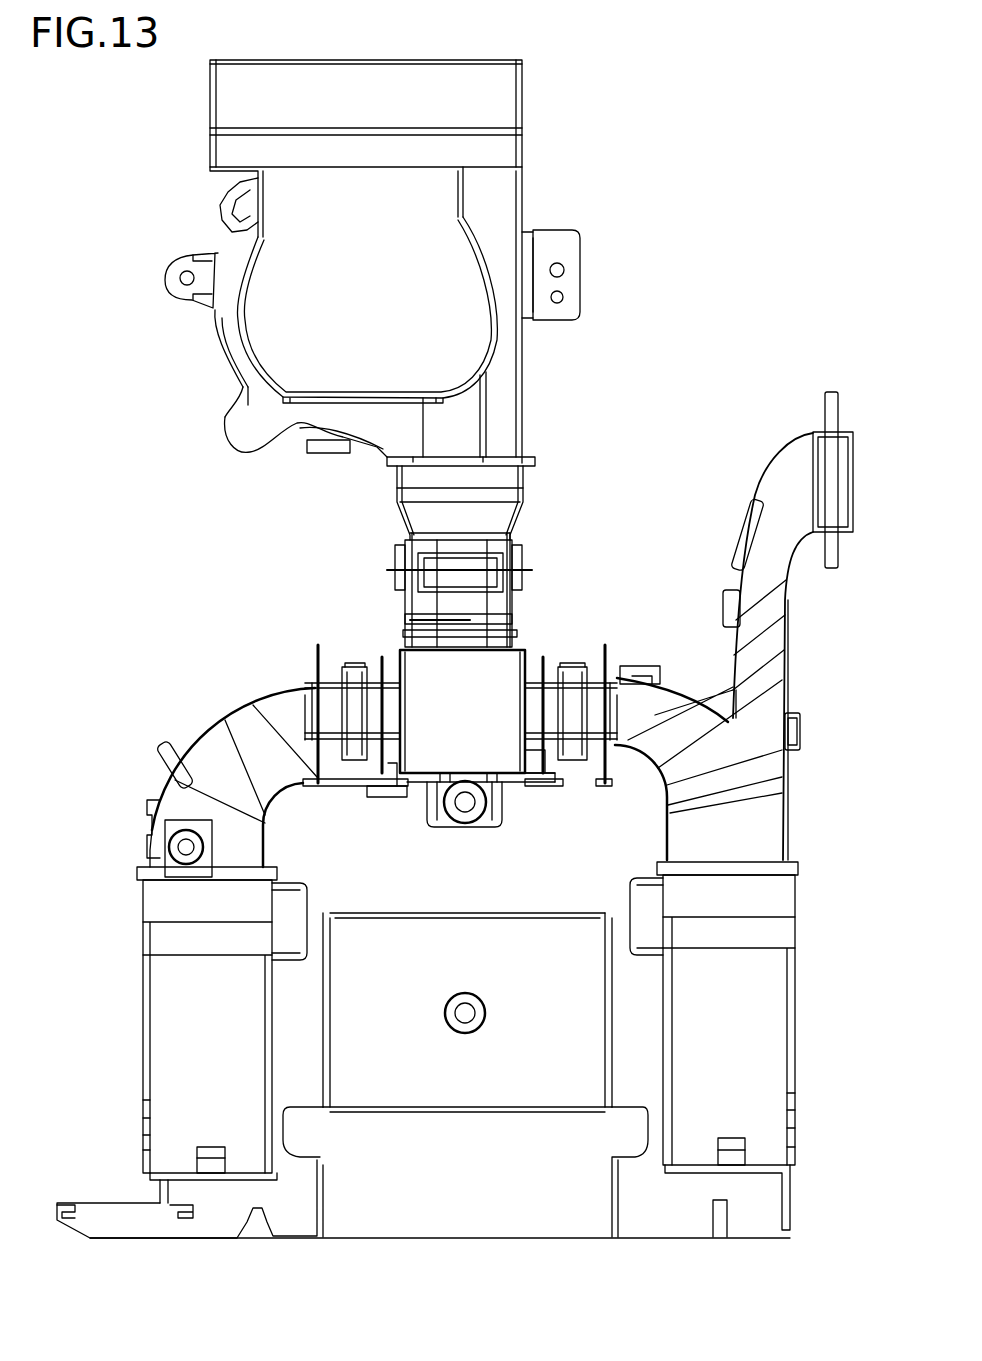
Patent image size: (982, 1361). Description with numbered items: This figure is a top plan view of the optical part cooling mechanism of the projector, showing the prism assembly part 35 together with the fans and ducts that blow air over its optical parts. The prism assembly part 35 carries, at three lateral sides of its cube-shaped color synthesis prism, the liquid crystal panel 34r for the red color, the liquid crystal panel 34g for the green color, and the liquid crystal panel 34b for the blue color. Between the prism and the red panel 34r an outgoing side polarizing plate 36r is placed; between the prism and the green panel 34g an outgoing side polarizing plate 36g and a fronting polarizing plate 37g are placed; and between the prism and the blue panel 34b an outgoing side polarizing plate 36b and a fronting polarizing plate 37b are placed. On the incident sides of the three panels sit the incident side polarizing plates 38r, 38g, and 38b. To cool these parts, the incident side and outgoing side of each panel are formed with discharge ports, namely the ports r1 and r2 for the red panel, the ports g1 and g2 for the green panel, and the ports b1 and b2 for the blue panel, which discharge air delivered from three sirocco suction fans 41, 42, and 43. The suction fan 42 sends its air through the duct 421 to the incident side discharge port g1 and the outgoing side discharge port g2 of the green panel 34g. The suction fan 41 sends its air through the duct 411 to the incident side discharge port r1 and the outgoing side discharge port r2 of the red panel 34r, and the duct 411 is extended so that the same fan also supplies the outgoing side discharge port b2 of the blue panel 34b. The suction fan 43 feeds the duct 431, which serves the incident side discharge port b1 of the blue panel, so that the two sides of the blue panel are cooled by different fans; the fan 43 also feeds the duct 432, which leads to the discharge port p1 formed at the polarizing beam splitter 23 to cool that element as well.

The suction fan 42 is at (233, 318).
The duct 421 is at (397, 488).
The incident side polarizing plate 38g is at (516, 553).
The liquid crystal panel for the green color 34g is at (515, 590).
The fronting polarizing plate 37g is at (515, 616).
The outgoing side polarizing plate 36g is at (518, 634).
The incident side discharge port g1 is at (400, 571).
The outgoing side discharge port g2 is at (412, 620).
The prism assembly part 35 is at (417, 795).
The incident side discharge port r1 is at (319, 665).
The outgoing side discharge port r2 is at (382, 670).
The liquid crystal panel for the red color 34r is at (347, 762).
The incident side polarizing plate 38r is at (328, 786).
The outgoing side polarizing plate 36r is at (392, 797).
The incident side discharge port b1 is at (607, 665).
The outgoing side discharge port b2 is at (545, 672).
The liquid crystal panel for the blue color 34b is at (572, 762).
The outgoing side polarizing plate 36b is at (543, 757).
The fronting polarizing plate 37b is at (560, 786).
The incident side polarizing plate 38b is at (605, 766).
The duct 431 is at (684, 690).
The duct 432 is at (790, 640).
The discharge port p1 is at (853, 455).
The polarizing beam splitter 23 is at (838, 410).
The duct 411 is at (227, 722).
The suction fan 41 is at (148, 1000).
The suction fan 43 is at (795, 987).